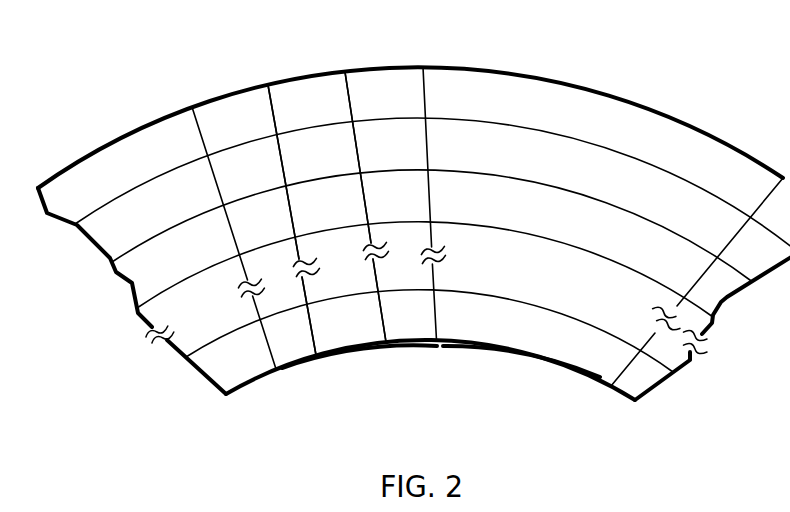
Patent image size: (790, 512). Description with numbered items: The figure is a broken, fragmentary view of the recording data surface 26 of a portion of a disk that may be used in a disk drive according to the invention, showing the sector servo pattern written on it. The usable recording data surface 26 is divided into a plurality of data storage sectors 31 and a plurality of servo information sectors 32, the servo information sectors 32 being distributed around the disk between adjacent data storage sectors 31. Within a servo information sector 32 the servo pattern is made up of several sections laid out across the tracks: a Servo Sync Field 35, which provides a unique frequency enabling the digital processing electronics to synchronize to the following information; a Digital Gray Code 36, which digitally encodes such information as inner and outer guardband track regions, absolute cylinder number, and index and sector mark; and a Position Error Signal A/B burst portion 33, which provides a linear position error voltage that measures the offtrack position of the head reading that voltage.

The recording data surface 26 is at (607, 108).
The data storage sector 31 is at (443, 347).
The servo information sector 32 is at (437, 347).
The Position Error Signal (PES) A/B burst portion 33 is at (425, 58).
The Servo Sync Field 35 is at (188, 97).
The Digital Gray Code 36 is at (343, 62).